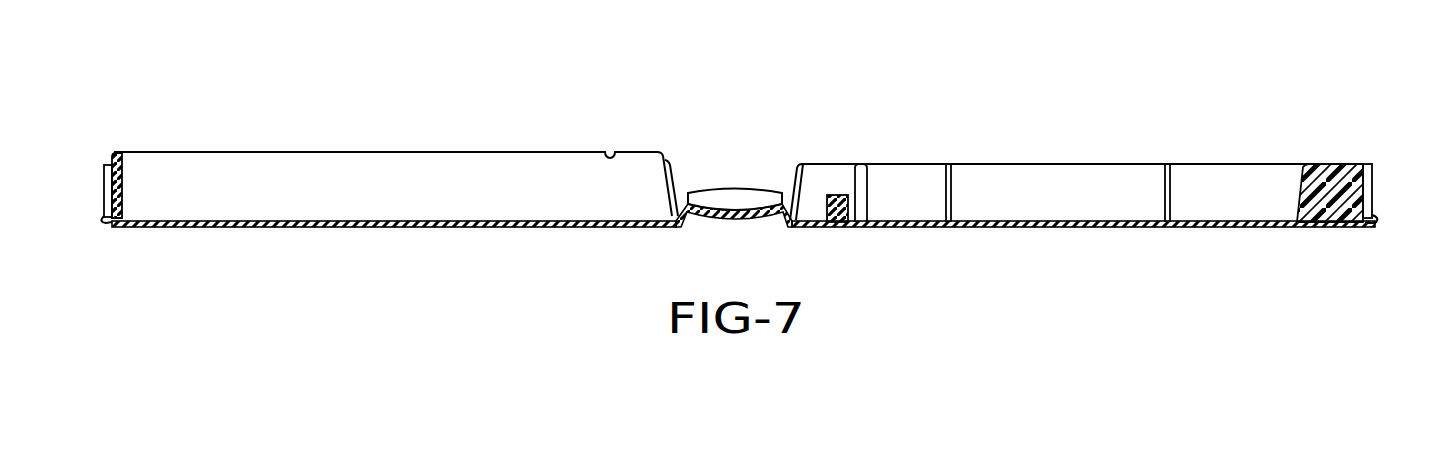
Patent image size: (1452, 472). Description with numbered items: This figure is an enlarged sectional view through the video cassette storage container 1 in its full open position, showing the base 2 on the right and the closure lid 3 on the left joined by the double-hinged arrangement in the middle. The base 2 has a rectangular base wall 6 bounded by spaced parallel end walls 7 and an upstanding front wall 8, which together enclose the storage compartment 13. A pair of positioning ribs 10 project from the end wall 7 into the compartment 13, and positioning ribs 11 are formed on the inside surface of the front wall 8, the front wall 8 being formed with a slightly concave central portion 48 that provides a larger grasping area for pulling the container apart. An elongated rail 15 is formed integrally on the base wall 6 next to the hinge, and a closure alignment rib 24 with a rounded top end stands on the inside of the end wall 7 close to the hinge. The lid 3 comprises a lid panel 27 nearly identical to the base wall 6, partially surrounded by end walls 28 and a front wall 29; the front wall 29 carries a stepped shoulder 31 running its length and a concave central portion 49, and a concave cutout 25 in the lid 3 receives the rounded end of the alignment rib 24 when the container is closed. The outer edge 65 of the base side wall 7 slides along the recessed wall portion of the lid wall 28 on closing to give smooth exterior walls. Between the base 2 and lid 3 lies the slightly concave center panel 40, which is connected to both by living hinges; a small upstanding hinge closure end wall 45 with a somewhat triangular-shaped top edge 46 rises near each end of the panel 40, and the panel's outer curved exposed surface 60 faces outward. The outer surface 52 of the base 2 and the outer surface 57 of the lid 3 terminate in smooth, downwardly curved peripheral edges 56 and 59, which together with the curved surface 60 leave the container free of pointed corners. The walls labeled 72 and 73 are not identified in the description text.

The video cassette storage container 1 is at (1008, 60).
The base 2 is at (1071, 232).
The closure lid 3 is at (456, 232).
The base wall 6 is at (1224, 221).
The end wall 7 is at (1078, 190).
The front wall 8 is at (1377, 197).
The positioning rib 10 is at (945, 188).
The positioning rib 11 is at (1299, 186).
The storage compartment 13 is at (1014, 199).
The rail 15 is at (827, 204).
The closure alignment rib 24 is at (861, 171).
The concave cutout 25 is at (612, 150).
The lid panel 27 is at (384, 222).
The end wall 28 is at (287, 177).
The front wall 29 is at (104, 213).
The stepped shoulder 31 is at (116, 162).
The center panel 40 is at (757, 223).
The hinge closure end wall 45 is at (725, 198).
The top edge 46 is at (750, 190).
The concave central portion 48 is at (1366, 190).
The concave central portion 49 is at (112, 190).
The outer surface 52 is at (1144, 228).
The peripheral edge 56 is at (1374, 224).
The outer surface 57 is at (338, 226).
The peripheral edge 59 is at (113, 228).
The outer curved exposed surface 60 is at (703, 230).
The outer edge 65 is at (1037, 163).
The base inner wall 72 is at (793, 180).
The cover inner wall 73 is at (675, 178).